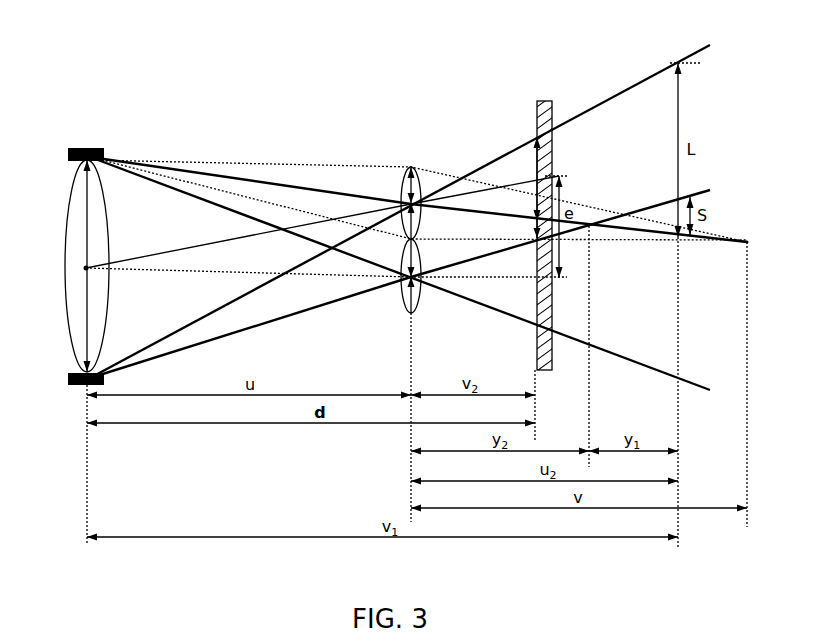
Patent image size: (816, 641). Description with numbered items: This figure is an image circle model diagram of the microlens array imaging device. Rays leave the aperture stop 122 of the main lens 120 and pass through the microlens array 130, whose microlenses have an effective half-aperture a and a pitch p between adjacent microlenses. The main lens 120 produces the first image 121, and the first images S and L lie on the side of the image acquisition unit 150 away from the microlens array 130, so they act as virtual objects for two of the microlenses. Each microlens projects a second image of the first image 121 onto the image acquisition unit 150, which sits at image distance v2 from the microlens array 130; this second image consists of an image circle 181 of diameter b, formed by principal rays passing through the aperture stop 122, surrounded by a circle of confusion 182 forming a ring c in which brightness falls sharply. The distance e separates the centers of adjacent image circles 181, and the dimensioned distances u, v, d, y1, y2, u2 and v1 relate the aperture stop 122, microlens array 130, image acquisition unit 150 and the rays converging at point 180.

The main lens 120 is at (63, 278).
The first image 121 is at (675, 88).
The aperture stop 122 is at (85, 148).
The microlens array 130 is at (403, 182).
The image acquisition unit 150 is at (540, 101).
The focal point 180 is at (748, 232).
The image circle 181 is at (535, 158).
The circle of confusion 182 is at (537, 227).